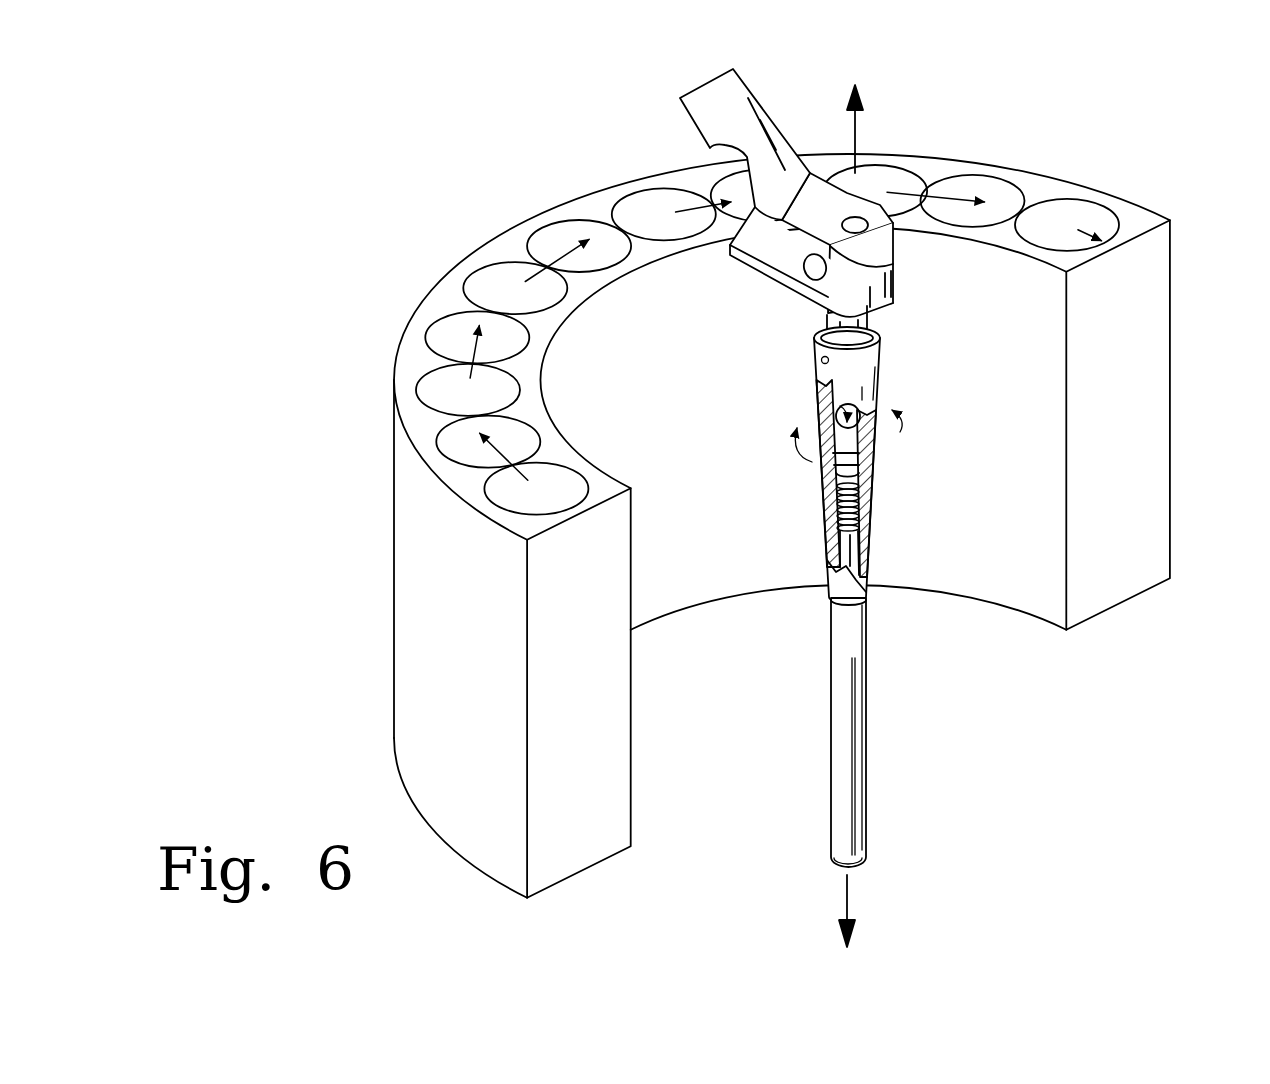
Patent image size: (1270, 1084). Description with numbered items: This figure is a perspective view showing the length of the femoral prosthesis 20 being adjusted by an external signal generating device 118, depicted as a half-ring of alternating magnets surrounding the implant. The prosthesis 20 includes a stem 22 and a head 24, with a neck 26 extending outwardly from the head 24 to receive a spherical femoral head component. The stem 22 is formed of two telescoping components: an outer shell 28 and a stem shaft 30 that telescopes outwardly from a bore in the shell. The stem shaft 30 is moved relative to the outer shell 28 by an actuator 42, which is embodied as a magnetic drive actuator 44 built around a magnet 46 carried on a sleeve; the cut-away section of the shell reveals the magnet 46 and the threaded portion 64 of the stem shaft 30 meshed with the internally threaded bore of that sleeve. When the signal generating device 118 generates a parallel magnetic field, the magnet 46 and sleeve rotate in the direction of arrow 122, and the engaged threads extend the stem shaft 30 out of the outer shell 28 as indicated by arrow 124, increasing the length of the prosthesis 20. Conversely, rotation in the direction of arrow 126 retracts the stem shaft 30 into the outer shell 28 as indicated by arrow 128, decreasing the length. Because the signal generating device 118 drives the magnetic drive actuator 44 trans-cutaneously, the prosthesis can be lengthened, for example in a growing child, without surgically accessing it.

The femoral prosthesis 20 is at (833, 498).
The stem 22 is at (863, 461).
The head 24 is at (842, 207).
The neck 26 is at (738, 93).
The outer shell 28 is at (847, 648).
The stem shaft 30 is at (837, 400).
The actuator 42 is at (857, 433).
The magnetic drive actuator 44 is at (865, 480).
The magnet 46 is at (820, 493).
The threaded portion 64 is at (853, 517).
The external signal generating device 118 is at (1133, 210).
The arrow 122 is at (812, 463).
The arrow 124 is at (853, 140).
The arrow 126 is at (900, 432).
The arrow 128 is at (845, 898).